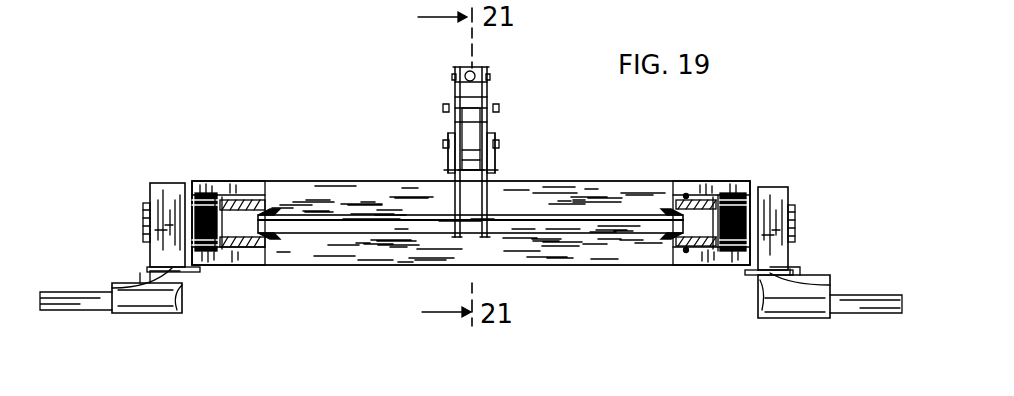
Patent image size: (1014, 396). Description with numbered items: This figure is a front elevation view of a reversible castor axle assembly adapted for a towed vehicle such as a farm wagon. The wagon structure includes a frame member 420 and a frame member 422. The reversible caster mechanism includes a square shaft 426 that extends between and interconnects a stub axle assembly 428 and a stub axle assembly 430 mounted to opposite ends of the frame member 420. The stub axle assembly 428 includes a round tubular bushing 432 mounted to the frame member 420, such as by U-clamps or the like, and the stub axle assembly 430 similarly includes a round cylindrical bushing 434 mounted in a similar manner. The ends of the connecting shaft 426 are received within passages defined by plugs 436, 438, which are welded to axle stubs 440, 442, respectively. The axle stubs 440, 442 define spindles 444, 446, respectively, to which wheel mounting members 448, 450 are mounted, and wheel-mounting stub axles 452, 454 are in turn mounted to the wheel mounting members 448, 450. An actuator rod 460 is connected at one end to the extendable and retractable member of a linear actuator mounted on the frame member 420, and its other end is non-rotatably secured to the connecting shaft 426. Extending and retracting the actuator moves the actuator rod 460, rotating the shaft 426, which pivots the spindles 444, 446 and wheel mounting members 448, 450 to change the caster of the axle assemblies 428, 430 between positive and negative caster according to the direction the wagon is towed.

The frame member 420 is at (597, 185).
The frame member 422 is at (493, 160).
The square shaft 426 is at (336, 236).
The stub axle assembly 428 is at (206, 160).
The stub axle assembly 430 is at (778, 168).
The round tubular bushing 432 is at (240, 198).
The round cylindrical bushing 434 is at (704, 208).
The plug 436 is at (268, 213).
The plug 438 is at (665, 208).
The axle stub 440 is at (238, 265).
The axle stub 442 is at (700, 245).
The spindle 444 is at (143, 220).
The spindle 446 is at (795, 224).
The wheel mounting member 448 is at (170, 183).
The wheel mounting member 450 is at (795, 198).
The wheel-mounting stub axle 452 is at (132, 313).
The wheel-mounting stub axle 454 is at (808, 317).
The actuator rod 460 is at (436, 200).